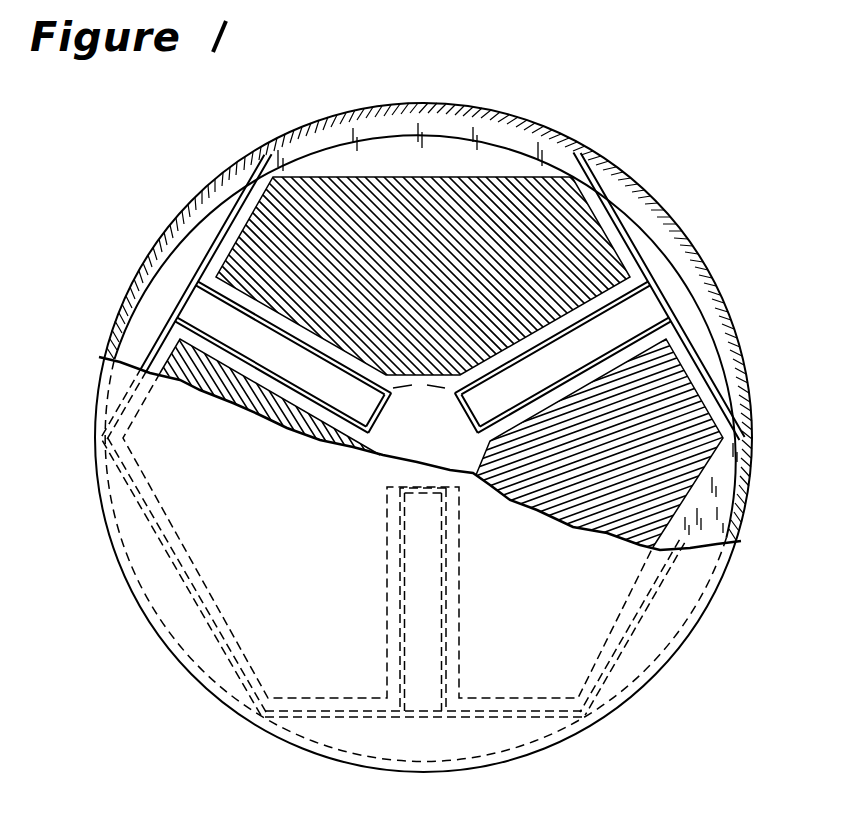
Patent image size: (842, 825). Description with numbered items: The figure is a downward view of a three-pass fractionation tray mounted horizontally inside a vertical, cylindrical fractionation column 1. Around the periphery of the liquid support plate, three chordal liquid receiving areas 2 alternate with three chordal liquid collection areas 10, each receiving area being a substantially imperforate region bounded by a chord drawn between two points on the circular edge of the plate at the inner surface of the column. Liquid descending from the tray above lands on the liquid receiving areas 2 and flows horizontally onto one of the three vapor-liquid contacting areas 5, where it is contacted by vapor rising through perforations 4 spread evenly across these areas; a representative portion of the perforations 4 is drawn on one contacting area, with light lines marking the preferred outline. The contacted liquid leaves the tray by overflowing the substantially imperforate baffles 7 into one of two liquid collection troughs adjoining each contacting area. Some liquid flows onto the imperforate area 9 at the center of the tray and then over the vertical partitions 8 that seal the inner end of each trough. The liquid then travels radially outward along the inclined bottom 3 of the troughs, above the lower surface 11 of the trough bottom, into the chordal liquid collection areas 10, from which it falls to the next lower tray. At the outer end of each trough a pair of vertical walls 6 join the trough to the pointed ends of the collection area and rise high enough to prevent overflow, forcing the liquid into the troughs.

The fractionation column 1 is at (597, 143).
The chordal liquid receiving areas 2 is at (386, 137).
The inclined bottom 3 is at (193, 303).
The perforations 4 is at (307, 250).
The vapor-liquid contacting areas 5 is at (580, 253).
The vertical walls 6 is at (218, 233).
The baffles 7 is at (290, 340).
The vertical partitions 8 is at (455, 395).
The imperforate area 9 is at (408, 443).
The chordal liquid collection areas 10 is at (118, 318).
The lower surface 11 is at (363, 407).